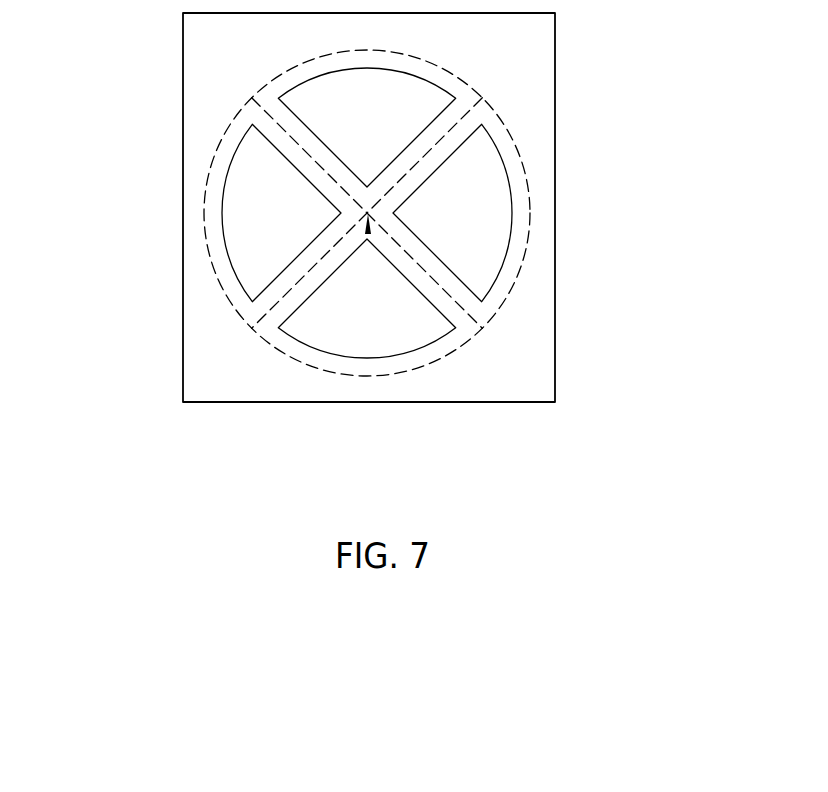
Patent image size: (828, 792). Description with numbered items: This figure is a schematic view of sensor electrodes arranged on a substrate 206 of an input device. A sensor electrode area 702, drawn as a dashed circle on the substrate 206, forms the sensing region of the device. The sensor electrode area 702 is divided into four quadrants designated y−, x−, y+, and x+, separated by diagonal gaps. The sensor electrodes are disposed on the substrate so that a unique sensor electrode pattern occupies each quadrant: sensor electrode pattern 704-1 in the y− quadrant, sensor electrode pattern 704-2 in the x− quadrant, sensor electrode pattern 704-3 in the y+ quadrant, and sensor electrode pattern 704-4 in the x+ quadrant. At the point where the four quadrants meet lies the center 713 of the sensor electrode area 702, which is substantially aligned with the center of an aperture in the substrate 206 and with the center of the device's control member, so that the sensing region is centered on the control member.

The substrate 206 is at (202, 402).
The sensor electrode area 702 is at (507, 128).
The sensor electrode pattern 704-1 is at (360, 358).
The sensor electrode pattern 704-2 is at (214, 193).
The sensor electrode pattern 704-3 is at (432, 85).
The sensor electrode pattern 704-4 is at (507, 252).
The center of the sensor electrode area 713 is at (368, 230).